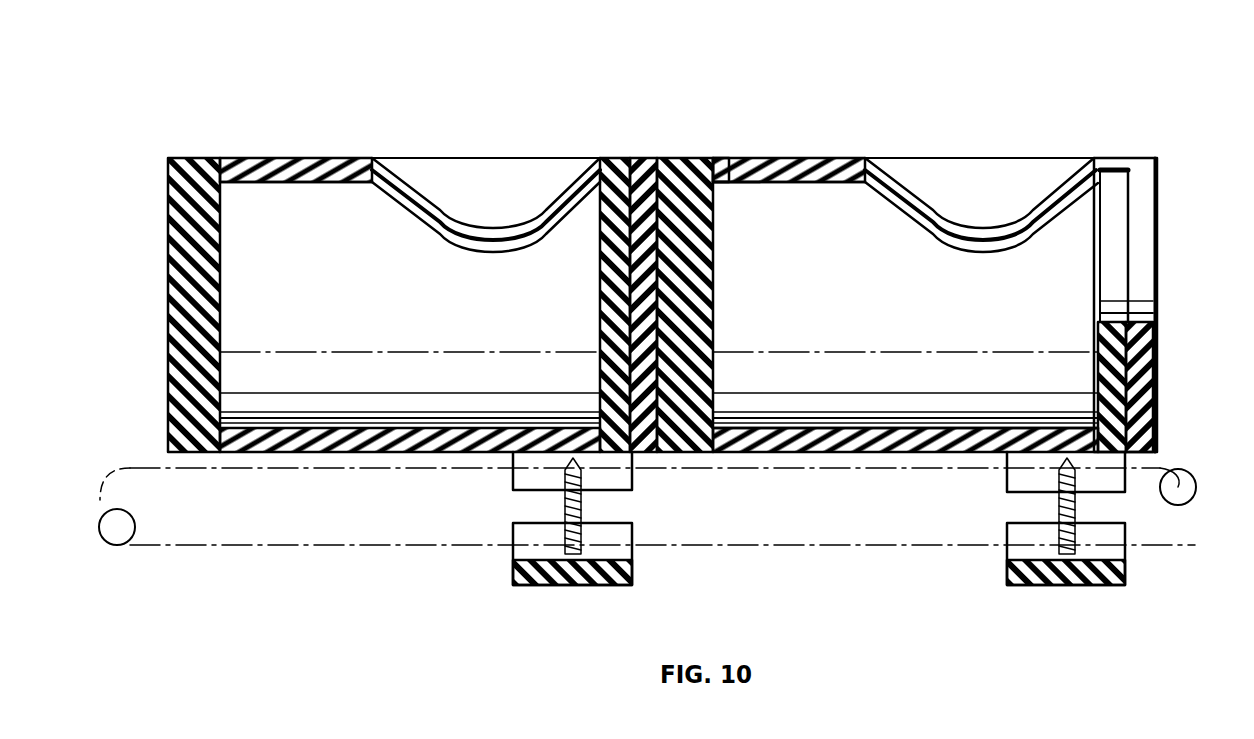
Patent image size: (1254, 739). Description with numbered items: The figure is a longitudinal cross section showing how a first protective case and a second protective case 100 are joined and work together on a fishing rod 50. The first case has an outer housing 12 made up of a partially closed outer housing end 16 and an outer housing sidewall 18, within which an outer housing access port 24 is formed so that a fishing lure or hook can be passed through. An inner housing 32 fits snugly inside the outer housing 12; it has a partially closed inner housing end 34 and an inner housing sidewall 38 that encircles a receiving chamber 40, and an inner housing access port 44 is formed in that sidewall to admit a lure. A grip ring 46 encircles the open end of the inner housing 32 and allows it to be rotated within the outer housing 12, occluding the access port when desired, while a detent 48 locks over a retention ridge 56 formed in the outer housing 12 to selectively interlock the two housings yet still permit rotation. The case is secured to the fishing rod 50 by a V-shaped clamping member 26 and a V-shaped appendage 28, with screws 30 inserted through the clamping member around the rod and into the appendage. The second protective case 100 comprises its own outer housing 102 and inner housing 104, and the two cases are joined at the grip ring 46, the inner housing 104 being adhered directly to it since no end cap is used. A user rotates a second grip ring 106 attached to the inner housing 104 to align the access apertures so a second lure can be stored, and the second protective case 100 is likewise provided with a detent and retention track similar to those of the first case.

The outer housing 12 is at (1160, 303).
The outer housing end 16 is at (1150, 228).
The outer housing sidewall 18 is at (803, 160).
The outer housing access port 24 is at (578, 164).
The V-shaped clamping member 26 is at (590, 586).
The V-shaped appendage 28 is at (620, 475).
The screws 30 is at (560, 502).
The inner housing 32 is at (1092, 326).
The inner housing end 34 is at (1120, 195).
The inner housing sidewall 38 is at (826, 184).
The receiving chamber 40 is at (878, 310).
The inner housing access port 44 is at (542, 233).
The grip ring 46 is at (680, 160).
The detent 48 is at (718, 160).
The fishing rod 50 is at (1178, 530).
The retention ridge 56 is at (716, 184).
The second protective case 100 is at (350, 122).
The outer housing 102 is at (273, 162).
The inner housing 104 is at (272, 182).
The second grip ring 106 is at (183, 160).